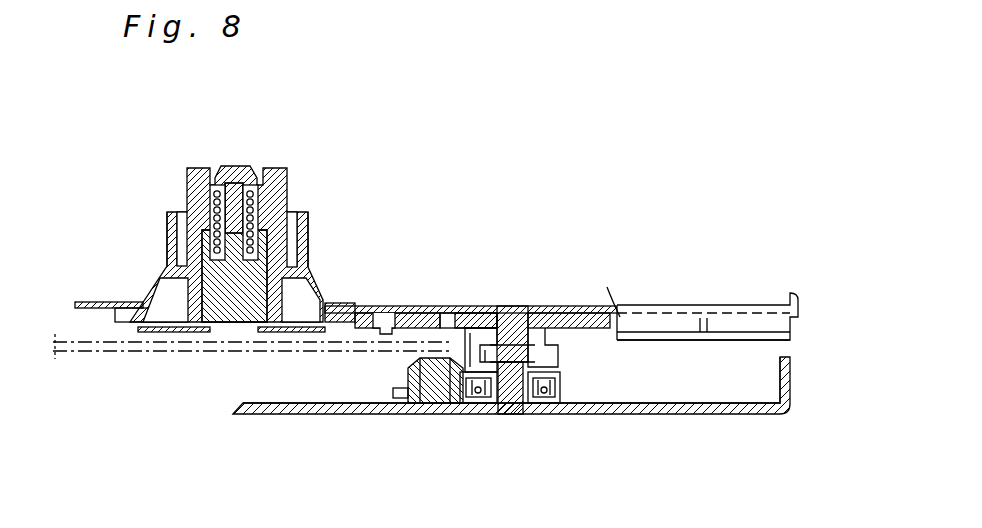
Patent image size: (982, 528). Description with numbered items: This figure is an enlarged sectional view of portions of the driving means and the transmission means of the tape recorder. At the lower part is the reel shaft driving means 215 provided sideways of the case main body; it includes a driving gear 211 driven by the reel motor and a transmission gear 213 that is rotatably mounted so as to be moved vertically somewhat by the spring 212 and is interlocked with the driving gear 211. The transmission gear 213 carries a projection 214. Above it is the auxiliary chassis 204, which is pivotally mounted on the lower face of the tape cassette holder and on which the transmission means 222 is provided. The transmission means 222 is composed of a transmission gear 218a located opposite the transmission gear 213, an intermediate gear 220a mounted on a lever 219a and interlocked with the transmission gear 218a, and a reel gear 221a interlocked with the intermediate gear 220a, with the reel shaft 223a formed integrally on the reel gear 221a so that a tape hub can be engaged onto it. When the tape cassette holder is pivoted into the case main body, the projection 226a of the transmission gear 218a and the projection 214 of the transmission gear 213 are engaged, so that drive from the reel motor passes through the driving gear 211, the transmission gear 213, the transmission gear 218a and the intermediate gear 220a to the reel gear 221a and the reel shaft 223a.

The auxiliary chassis 204 is at (595, 307).
The driving gear 211 is at (433, 417).
The spring 212 is at (547, 417).
The transmission gear 213 is at (563, 380).
The projection 214 is at (452, 305).
The reel shaft driving means 215 is at (573, 352).
The transmission gear 218a is at (572, 307).
The lever 219a is at (367, 305).
The intermediate gear 220a is at (405, 305).
The reel gear 221a is at (130, 303).
The transmission means 222 is at (338, 333).
The reel shaft 223a is at (238, 215).
The projection 226a is at (482, 305).